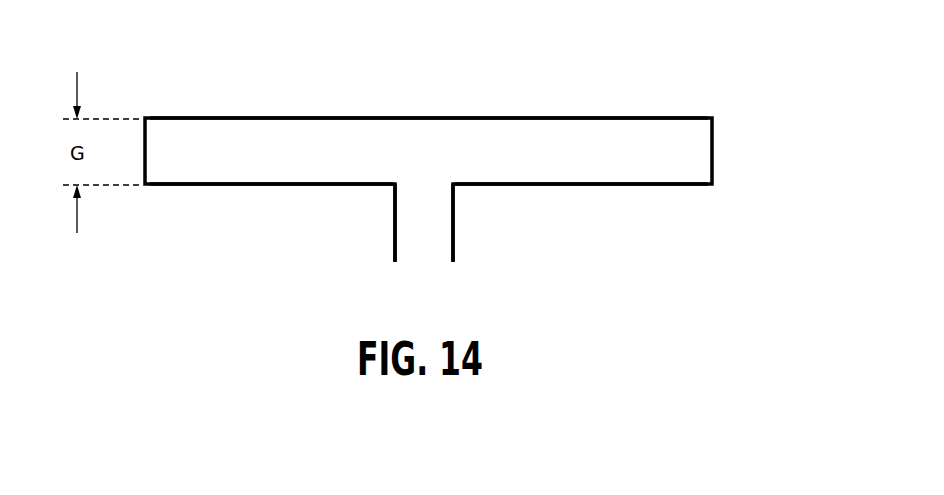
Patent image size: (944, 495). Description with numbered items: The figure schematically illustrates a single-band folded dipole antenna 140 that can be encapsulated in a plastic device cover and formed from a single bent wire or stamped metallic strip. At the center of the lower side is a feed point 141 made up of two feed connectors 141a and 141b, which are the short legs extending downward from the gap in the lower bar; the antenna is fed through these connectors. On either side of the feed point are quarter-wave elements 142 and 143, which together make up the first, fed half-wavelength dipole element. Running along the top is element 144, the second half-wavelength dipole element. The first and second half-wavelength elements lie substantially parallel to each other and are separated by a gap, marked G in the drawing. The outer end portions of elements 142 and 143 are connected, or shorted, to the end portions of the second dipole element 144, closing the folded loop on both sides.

The folded dipole antenna 140 is at (697, 232).
The feed point 141 is at (421, 258).
The feed connector 141a is at (395, 222).
The feed connector 141b is at (453, 214).
The quarter-wave element 142 is at (213, 186).
The quarter-wave element 143 is at (575, 184).
The second half-wavelength dipole element 144 is at (520, 118).